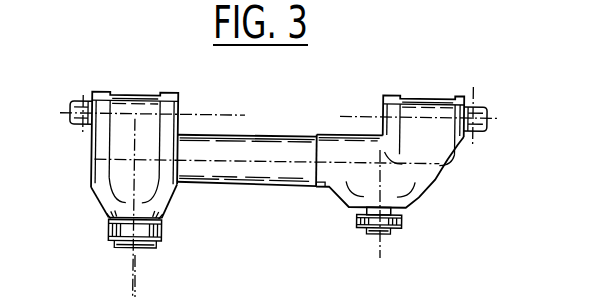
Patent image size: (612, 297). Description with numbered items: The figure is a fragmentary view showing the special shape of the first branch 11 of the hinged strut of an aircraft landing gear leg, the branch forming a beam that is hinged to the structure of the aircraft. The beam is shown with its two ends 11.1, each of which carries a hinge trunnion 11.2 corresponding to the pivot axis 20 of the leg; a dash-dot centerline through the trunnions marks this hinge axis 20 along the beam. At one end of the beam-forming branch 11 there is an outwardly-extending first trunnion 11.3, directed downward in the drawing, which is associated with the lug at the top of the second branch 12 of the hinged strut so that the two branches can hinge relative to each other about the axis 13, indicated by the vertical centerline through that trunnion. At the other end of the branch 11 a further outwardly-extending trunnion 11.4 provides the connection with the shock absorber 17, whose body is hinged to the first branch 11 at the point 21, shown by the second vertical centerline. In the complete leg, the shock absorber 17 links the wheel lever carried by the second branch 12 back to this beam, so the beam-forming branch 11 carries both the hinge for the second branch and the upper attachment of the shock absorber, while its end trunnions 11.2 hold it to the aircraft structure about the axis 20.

The first branch 11 is at (283, 133).
The ends of the first branch 11.1 is at (143, 118).
The hinge trunnion 11.2 is at (80, 100).
The first trunnion 11.3 is at (125, 246).
The trunnion 11.4 is at (388, 234).
The second branch 12 is at (166, 228).
The hinge axis 13 is at (137, 273).
The shock absorber 17 is at (360, 220).
The hinge axis 20 is at (224, 113).
The hinge point of the shock absorber body 21 is at (383, 268).